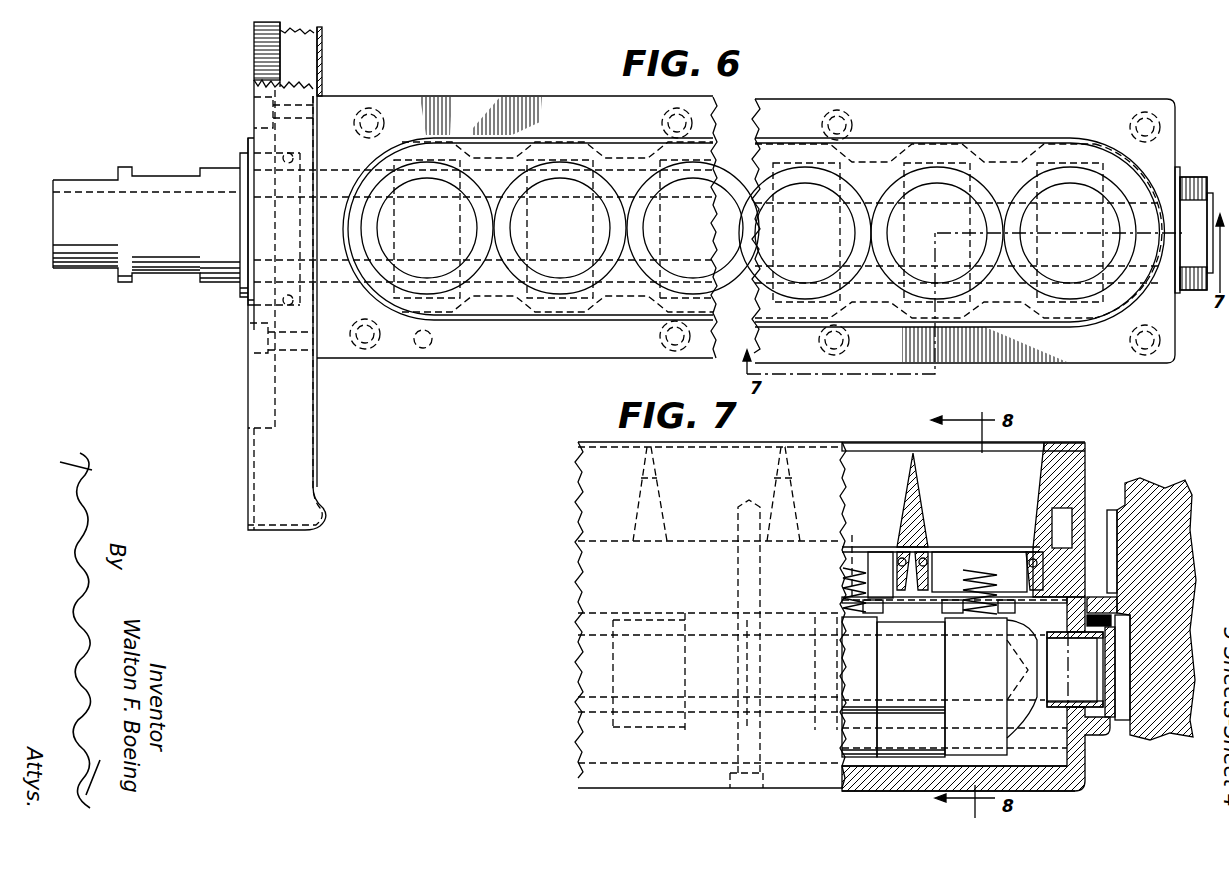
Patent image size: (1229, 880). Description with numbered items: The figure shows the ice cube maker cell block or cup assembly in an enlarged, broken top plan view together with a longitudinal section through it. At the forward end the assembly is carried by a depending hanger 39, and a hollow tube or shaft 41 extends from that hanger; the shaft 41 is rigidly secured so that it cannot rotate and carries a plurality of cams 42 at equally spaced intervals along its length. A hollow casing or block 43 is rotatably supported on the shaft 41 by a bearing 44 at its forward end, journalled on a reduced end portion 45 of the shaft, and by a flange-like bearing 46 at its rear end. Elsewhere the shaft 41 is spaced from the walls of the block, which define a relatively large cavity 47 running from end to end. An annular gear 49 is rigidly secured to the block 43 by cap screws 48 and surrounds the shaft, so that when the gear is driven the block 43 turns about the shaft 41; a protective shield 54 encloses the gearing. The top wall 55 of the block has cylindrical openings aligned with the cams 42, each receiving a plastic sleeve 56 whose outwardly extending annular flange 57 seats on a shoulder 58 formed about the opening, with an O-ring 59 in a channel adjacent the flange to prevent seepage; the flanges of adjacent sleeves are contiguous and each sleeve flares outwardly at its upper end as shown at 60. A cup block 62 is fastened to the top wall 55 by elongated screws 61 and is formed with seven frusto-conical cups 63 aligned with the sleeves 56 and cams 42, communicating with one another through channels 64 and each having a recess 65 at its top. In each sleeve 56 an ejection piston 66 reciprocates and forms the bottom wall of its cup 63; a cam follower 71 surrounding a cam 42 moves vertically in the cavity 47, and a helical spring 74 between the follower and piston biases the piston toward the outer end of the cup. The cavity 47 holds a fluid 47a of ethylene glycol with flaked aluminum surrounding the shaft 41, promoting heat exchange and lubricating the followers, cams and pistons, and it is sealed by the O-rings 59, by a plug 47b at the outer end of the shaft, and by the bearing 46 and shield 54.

In FIG. 7, the hanger 39 is at (1178, 483).
In FIG. 6, the shaft 41 is at (62, 266).
In FIG. 7, the shaft 41 is at (910, 703).
In FIG. 6, the cams 42 is at (990, 158).
In FIG. 7, the cams 42 is at (602, 618).
In FIG. 7, the block 43 is at (1085, 768).
In FIG. 7, the bearing 44 is at (1102, 597).
In FIG. 6, the reduced end portion 45 is at (1188, 217).
In FIG. 7, the reduced end portion 45 is at (1083, 668).
In FIG. 6, the flange-like bearing 46 is at (297, 355).
In FIG. 7, the cavity 47 is at (930, 766).
In FIG. 7, the fluid 47a is at (897, 760).
In FIG. 6, the plug 47b is at (1207, 195).
In FIG. 7, the plug 47b is at (1112, 685).
In FIG. 6, the cap screws 48 is at (254, 108).
In FIG. 6, the annular gear 49 is at (258, 44).
In FIG. 6, the protective shield 54 is at (323, 48).
In FIG. 7, the top wall 55 is at (1107, 520).
In FIG. 7, the sleeve 56 is at (885, 606).
In FIG. 7, the annular flange 57 is at (905, 556).
In FIG. 7, the shoulder 58 is at (927, 560).
In FIG. 7, the O-ring 59 is at (1030, 552).
In FIG. 7, the flared upper end 60 is at (1031, 556).
In FIG. 7, the elongated screws 61 is at (1088, 502).
In FIG. 6, the cup block 62 is at (993, 115).
In FIG. 7, the cup block 62 is at (1085, 468).
In FIG. 6, the cups 63 is at (945, 228).
In FIG. 7, the cups 63 is at (1012, 451).
In FIG. 6, the channels 64 is at (492, 228).
In FIG. 7, the channels 64 is at (880, 462).
In FIG. 6, the recess 65 is at (827, 177).
In FIG. 7, the recess 65 is at (1068, 451).
In FIG. 7, the ejection piston 66 is at (878, 560).
In FIG. 7, the cam follower 71 is at (968, 688).
In FIG. 7, the helical spring 74 is at (852, 535).